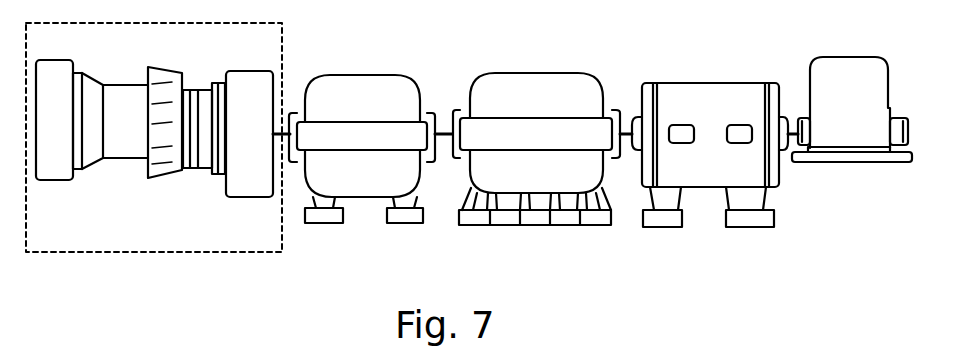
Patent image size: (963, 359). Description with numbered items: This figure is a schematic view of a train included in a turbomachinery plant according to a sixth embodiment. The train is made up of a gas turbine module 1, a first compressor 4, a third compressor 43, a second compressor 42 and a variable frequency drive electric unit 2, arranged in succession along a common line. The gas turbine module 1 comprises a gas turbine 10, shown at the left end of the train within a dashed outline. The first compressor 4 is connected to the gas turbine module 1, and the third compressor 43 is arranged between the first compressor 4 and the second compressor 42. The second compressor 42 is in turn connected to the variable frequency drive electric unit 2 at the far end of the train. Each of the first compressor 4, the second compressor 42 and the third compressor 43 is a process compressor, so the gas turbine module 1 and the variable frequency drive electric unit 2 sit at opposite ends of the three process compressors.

The gas turbine module 1 is at (216, 266).
The gas turbine 10 is at (107, 202).
The first compressor 4 is at (370, 245).
The third compressor 43 is at (584, 257).
The second compressor 42 is at (750, 260).
The variable frequency drive electric unit 2 is at (853, 198).